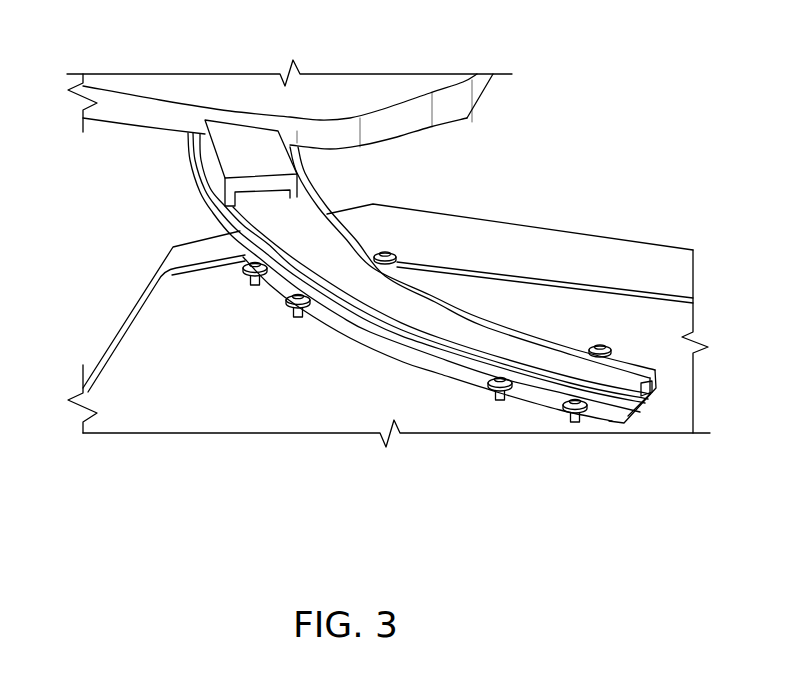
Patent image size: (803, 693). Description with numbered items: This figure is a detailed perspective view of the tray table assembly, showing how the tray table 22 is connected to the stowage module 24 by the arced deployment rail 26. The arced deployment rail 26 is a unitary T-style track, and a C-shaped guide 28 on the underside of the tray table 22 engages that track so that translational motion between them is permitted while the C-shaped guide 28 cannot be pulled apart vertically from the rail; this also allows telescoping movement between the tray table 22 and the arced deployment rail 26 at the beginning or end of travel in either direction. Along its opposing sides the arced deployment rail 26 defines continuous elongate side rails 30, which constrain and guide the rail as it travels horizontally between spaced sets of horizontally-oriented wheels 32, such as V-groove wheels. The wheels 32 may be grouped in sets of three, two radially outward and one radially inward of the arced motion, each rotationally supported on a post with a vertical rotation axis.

The tray table 22 is at (448, 113).
The stowage module 24 is at (555, 245).
The arced deployment rail 26 is at (267, 218).
The C-shaped guide 28 is at (232, 154).
The elongate side rails 30 is at (660, 373).
The wheels 32 is at (298, 318).